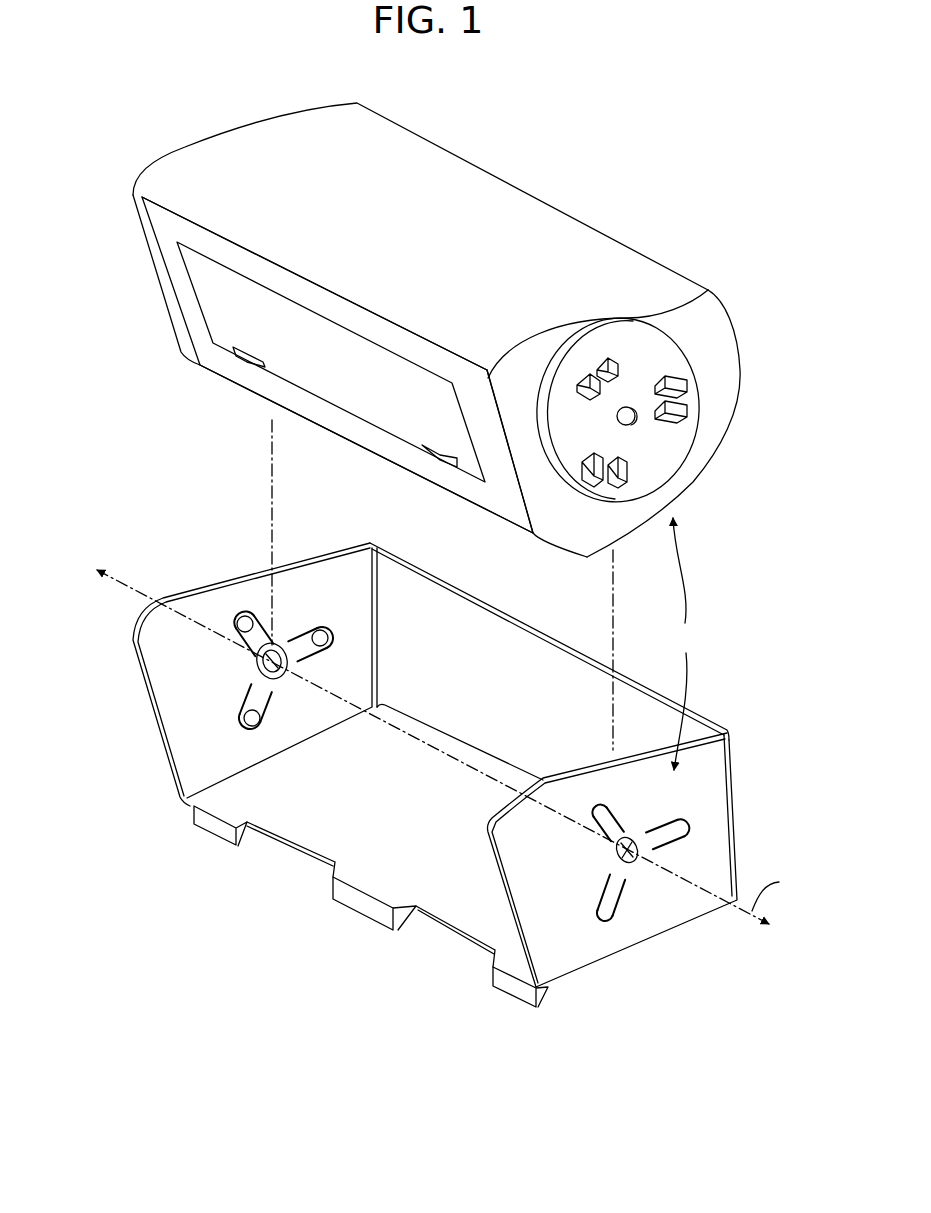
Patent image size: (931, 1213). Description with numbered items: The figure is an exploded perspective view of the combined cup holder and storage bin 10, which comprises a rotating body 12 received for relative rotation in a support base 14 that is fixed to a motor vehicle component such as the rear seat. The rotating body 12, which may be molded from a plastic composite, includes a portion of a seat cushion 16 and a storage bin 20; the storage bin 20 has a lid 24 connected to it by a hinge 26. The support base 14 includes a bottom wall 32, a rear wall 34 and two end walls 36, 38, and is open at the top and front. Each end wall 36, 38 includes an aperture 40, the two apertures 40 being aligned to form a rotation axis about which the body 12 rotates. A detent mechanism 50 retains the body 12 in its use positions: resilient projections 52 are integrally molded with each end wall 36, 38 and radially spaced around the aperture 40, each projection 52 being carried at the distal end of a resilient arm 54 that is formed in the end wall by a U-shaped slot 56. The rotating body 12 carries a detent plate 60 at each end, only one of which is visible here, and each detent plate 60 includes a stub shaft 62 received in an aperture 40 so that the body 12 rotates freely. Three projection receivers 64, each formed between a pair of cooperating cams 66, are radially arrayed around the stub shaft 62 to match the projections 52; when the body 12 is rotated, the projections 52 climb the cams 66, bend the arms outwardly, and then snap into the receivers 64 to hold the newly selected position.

The combined cup holder and storage bin 10 is at (635, 152).
The rotating body 12 is at (157, 287).
The support base 14 is at (143, 613).
The seat cushion 16 is at (210, 200).
The storage bin 20 is at (260, 380).
The lid 24 is at (245, 320).
The hinge 26 is at (245, 357).
The bottom wall 32 is at (412, 856).
The rear wall 34 is at (528, 704).
The end wall 36 is at (191, 657).
The end wall 38 is at (528, 844).
The aperture 40 is at (257, 670).
The detent mechanism 50 is at (686, 644).
The resilient projection 52 is at (237, 612).
The resilient arm 54 is at (260, 622).
The U-shaped slot 56 is at (307, 657).
The detent plate 60 is at (660, 333).
The stub shaft 62 is at (630, 408).
The projection receiver 64 is at (590, 383).
The cam 66 is at (613, 380).